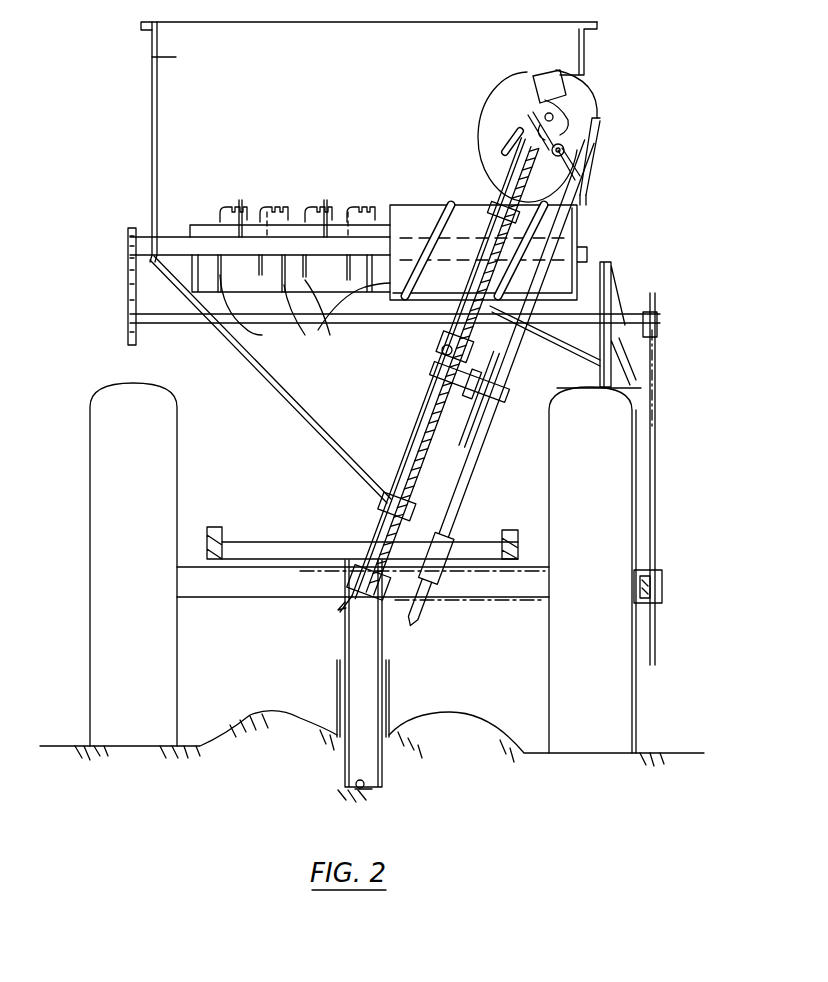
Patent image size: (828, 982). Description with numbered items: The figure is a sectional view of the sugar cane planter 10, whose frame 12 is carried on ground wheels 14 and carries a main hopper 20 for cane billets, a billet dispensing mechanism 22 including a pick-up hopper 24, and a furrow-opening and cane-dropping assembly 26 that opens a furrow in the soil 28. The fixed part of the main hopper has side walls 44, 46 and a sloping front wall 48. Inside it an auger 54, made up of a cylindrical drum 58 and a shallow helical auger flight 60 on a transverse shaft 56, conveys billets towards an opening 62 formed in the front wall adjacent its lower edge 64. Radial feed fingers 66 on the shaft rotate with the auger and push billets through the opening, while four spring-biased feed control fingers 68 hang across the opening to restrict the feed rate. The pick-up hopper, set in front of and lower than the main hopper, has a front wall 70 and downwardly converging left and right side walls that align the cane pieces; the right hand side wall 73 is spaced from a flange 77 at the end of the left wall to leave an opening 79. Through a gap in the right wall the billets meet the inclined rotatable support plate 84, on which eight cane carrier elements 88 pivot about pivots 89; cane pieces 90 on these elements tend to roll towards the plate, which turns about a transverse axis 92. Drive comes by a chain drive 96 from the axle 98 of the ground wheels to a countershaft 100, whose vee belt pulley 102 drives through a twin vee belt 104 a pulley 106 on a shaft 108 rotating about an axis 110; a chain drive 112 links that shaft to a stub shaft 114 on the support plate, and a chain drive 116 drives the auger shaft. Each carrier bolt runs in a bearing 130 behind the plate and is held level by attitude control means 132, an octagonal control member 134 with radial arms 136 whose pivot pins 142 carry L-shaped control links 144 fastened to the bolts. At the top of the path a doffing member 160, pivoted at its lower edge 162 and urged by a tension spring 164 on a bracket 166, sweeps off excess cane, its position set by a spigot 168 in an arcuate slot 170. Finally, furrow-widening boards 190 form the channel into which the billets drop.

The planter 10 is at (596, 22).
The frame 12 is at (236, 545).
The ground wheels 14 is at (177, 674).
The main hopper 20 is at (148, 77).
The billet dispensing mechanism 22 is at (494, 172).
The pick-up hopper 24 is at (296, 430).
The furrow-opening and cane-dropping assembly 26 is at (388, 772).
The soil 28 is at (276, 712).
The side wall 44 is at (150, 104).
The side wall 46 is at (586, 47).
The sloping front wall 48 is at (152, 57).
The auger 54 is at (372, 190).
The shaft 56 is at (172, 237).
The cylindrical drum 58 is at (540, 292).
The helical auger flight 60 is at (420, 210).
The opening 62 is at (222, 225).
The lower edge 64 is at (220, 335).
The radial feed fingers 66 is at (240, 200).
The feed control fingers 68 is at (267, 212).
The front wall 70 is at (325, 388).
The right hand side wall 73 is at (453, 425).
The flange 77 is at (380, 540).
The opening 79 is at (405, 485).
The rotatable support plate 84 is at (438, 420).
The cane carrier elements 88 is at (500, 146).
The pivots 89 is at (344, 612).
The cane pieces 90 is at (365, 790).
The transverse axis 92 is at (446, 402).
The chain drive 96 is at (650, 510).
The axle 98 is at (636, 570).
The transverse countershaft 100 is at (150, 318).
The vee belt pulley 102 is at (612, 581).
The twin vee belt 104 is at (611, 268).
The pulley 106 is at (656, 320).
The shaft 108 is at (628, 410).
The axis 110 is at (590, 392).
The chain drive 112 is at (500, 370).
The stub shaft 114 is at (482, 420).
The chain drive 116 is at (128, 262).
The bearing 130 is at (400, 610).
The attitude control means 132 is at (425, 605).
The control member 134 is at (608, 118).
The radial arms 136 is at (478, 478).
The pivot pin 142 is at (438, 545).
The L-shaped control links 144 is at (440, 606).
The doffing member 160 is at (520, 100).
The lower edge 162 is at (566, 150).
The tension spring 164 is at (545, 74).
The bracket 166 is at (520, 92).
The spigot 168 is at (602, 84).
The arcuate slot 170 is at (528, 122).
The furrow-widening boards 190 is at (340, 770).